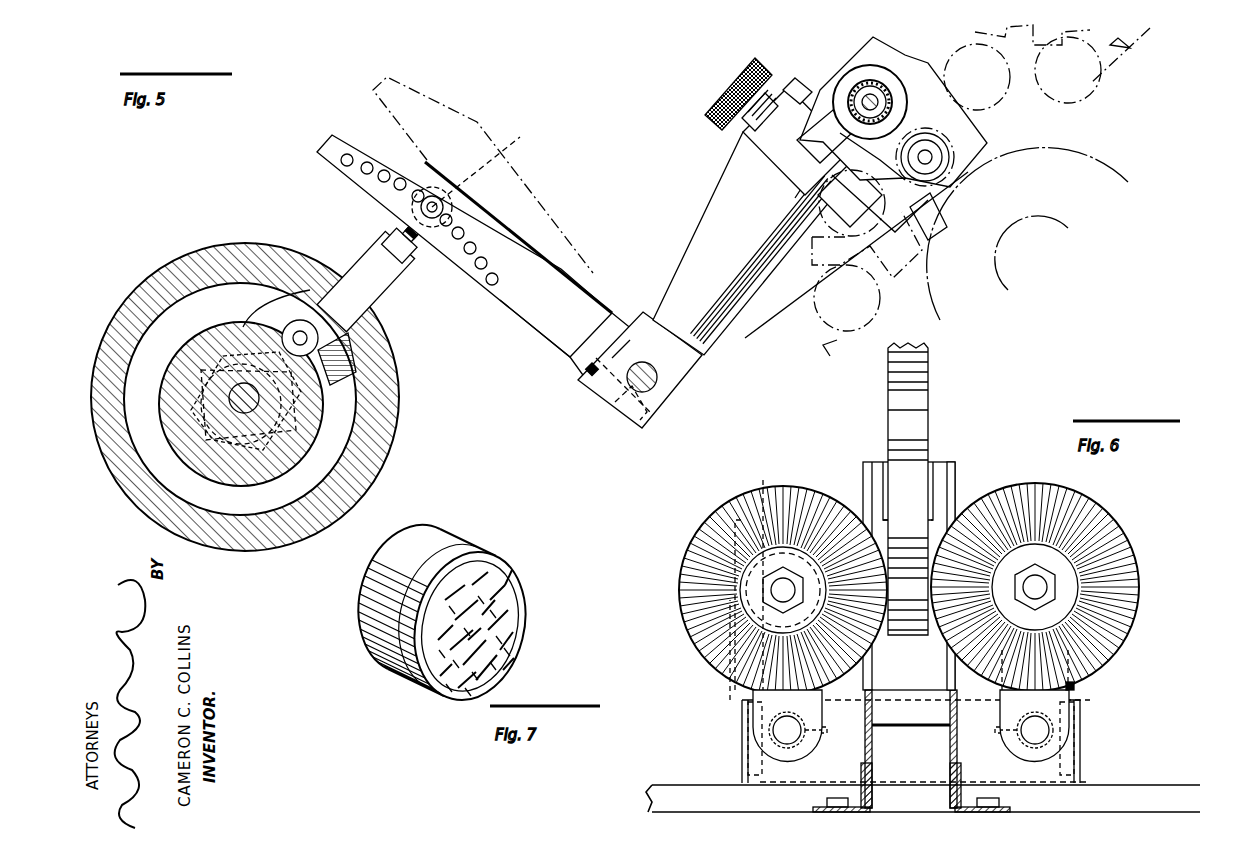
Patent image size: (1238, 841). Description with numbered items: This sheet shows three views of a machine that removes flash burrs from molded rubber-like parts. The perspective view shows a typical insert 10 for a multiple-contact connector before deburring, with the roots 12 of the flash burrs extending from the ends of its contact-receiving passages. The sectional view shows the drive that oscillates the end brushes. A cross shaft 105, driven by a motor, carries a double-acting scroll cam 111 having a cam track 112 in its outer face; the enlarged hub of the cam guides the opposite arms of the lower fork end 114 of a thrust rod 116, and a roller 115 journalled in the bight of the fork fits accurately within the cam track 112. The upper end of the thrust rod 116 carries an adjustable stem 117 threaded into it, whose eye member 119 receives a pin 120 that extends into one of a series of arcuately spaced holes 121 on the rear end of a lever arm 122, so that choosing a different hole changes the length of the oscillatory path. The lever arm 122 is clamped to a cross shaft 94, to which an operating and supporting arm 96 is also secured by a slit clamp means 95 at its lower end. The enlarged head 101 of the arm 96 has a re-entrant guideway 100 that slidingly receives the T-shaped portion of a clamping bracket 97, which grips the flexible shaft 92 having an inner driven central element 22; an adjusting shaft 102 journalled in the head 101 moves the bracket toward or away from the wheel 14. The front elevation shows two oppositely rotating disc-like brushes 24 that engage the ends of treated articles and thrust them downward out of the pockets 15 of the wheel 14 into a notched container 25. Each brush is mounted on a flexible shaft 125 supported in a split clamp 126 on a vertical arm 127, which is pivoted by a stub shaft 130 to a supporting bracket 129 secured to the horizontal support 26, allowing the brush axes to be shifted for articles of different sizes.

In FIG. 7, the insert 10 is at (372, 645).
In FIG. 7, the roots 12 is at (498, 568).
In FIG. 5, the wheel 14 is at (1025, 34).
In FIG. 6, the wheel 14 is at (942, 450).
In FIG. 5, the pockets 15 is at (1124, 55).
In FIG. 6, the pockets 15 is at (916, 440).
In FIG. 5, the inner driven central element 22 is at (870, 94).
In FIG. 6, the disc-like brushes 24 is at (702, 525).
In FIG. 6, the container 25 is at (958, 490).
In FIG. 6, the horizontal support 26 is at (655, 800).
In FIG. 5, the flexible shaft 92 is at (950, 148).
In FIG. 5, the cross shaft 94 is at (642, 362).
In FIG. 5, the slit clamp means 95 is at (590, 372).
In FIG. 5, the operating and supporting arm 96 is at (720, 235).
In FIG. 5, the clamping bracket 97 is at (826, 80).
In FIG. 5, the re-entrant guideway 100 is at (830, 187).
In FIG. 5, the enlarged head 101 is at (748, 138).
In FIG. 5, the adjusting shaft 102 is at (715, 103).
In FIG. 5, the cross shaft 105 is at (244, 413).
In FIG. 5, the scroll cam 111 is at (150, 272).
In FIG. 5, the cam track 112 is at (345, 442).
In FIG. 5, the lower fork end 114 is at (358, 364).
In FIG. 5, the roller 115 is at (318, 338).
In FIG. 5, the thrust rod 116 is at (360, 268).
In FIG. 5, the stem 117 is at (418, 246).
In FIG. 5, the eye member 119 is at (483, 175).
In FIG. 5, the pin 120 is at (440, 205).
In FIG. 5, the holes 121 is at (366, 160).
In FIG. 5, the lever arm 122 is at (548, 335).
In FIG. 6, the flexible shafts 125 is at (778, 594).
In FIG. 6, the split clamp 126 is at (899, 583).
In FIG. 6, the vertical arm 127 is at (760, 705).
In FIG. 6, the supporting brackets 129 is at (742, 767).
In FIG. 6, the stub shafts 130 is at (775, 730).